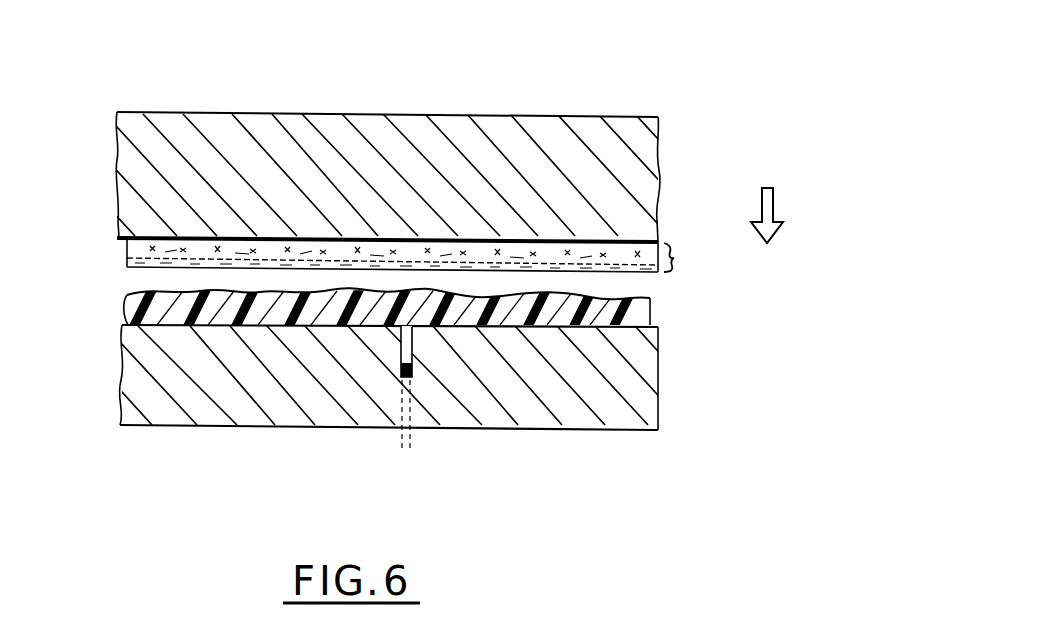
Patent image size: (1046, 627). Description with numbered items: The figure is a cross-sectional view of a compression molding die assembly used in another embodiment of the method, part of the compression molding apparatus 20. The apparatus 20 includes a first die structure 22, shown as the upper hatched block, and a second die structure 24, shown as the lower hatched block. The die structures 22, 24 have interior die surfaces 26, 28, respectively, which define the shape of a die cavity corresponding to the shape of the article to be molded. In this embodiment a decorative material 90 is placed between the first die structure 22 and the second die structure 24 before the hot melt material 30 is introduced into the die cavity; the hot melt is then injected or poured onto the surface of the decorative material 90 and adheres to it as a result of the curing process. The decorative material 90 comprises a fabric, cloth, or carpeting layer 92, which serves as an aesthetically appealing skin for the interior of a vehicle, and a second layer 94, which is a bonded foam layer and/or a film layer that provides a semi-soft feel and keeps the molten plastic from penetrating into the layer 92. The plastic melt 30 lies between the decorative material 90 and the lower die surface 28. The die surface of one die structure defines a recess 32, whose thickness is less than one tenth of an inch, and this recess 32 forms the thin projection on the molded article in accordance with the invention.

The compression molding apparatus 20 is at (664, 90).
The first die structure 22 is at (122, 212).
The second die structure 24 is at (138, 373).
The interior die surface 26 is at (126, 257).
The interior die surface 28 is at (128, 297).
The plastic melt 30 is at (396, 306).
The recess 32 is at (400, 373).
The decorative material 90 is at (687, 260).
The fabric, cloth, or carpeting layer 92 is at (635, 240).
The second layer 94 is at (136, 268).